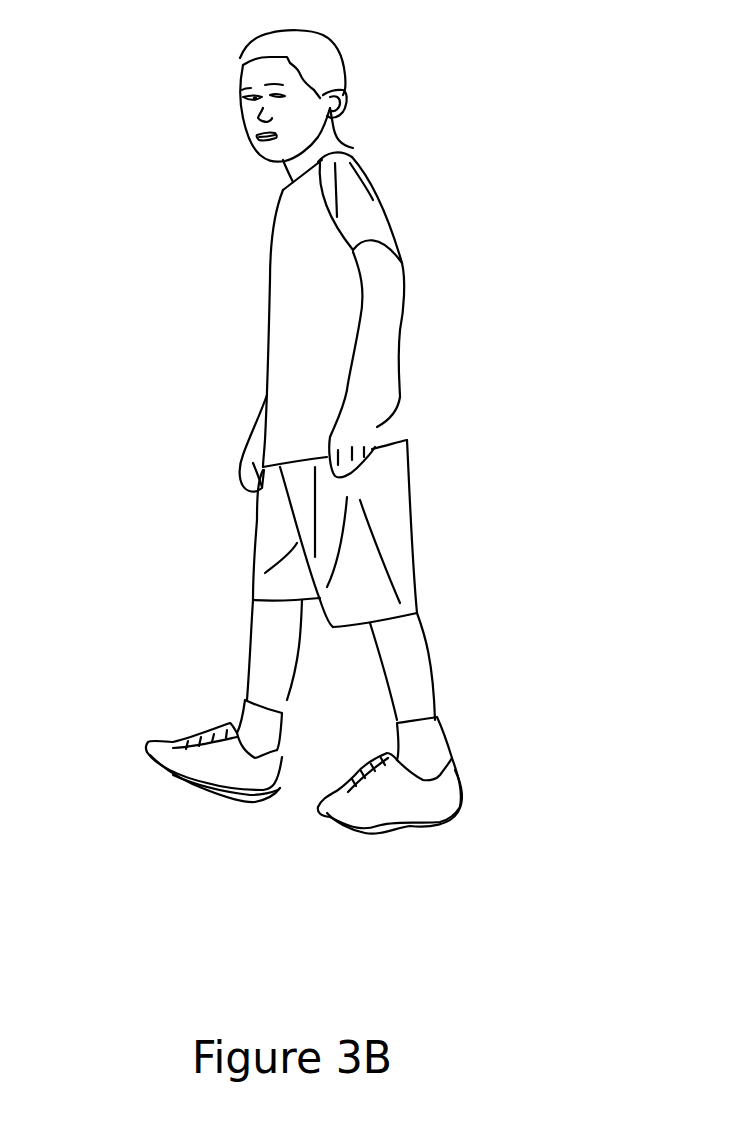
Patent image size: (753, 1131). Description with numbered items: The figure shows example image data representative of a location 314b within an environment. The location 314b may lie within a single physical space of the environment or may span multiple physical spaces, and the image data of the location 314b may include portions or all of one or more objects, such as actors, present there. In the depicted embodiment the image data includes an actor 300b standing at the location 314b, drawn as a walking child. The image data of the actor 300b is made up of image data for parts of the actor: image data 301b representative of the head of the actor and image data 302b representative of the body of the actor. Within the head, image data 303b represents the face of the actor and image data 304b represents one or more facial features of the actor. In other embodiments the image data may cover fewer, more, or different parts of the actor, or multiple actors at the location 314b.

The actor 300b is at (390, 420).
The image data representative of the head of the actor 301b is at (252, 37).
The image data representative of the body of the actor 302b is at (267, 333).
The image data representative of the face of the actor 303b is at (220, 88).
The image data representative of one or more facial features of the actor 304b is at (238, 140).
The location 314b is at (591, 106).